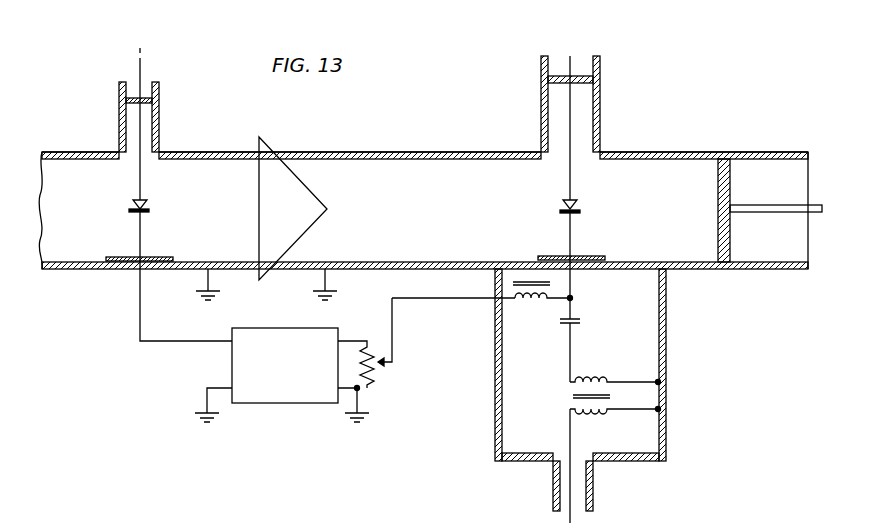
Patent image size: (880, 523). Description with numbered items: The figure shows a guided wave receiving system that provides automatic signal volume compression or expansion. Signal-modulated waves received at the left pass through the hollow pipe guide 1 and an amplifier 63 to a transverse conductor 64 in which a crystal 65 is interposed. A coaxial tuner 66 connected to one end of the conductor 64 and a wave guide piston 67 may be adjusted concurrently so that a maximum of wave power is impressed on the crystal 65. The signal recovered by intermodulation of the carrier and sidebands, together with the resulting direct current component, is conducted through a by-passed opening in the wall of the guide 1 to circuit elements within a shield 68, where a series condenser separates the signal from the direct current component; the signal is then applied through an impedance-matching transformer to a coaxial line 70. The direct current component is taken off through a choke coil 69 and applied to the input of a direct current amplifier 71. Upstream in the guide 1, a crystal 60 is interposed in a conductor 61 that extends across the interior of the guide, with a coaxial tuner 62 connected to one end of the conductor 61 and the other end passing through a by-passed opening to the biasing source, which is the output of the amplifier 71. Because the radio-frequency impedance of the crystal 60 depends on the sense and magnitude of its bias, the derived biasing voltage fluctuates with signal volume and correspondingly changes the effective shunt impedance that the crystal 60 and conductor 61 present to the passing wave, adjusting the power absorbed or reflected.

The hollow pipe guide 1 is at (62, 152).
The crystal 60 is at (148, 206).
The conductor 61 is at (143, 239).
The coaxial tuner 62 is at (160, 113).
The amplifier 63 is at (267, 142).
The transverse conductor 64 is at (572, 178).
The crystal 65 is at (580, 207).
The coaxial tuner 66 is at (600, 104).
The wave guide piston 67 is at (731, 178).
The shield 68 is at (667, 336).
The choke coil 69 is at (535, 315).
The coaxial line 70 is at (576, 488).
The direct current amplifier 71 is at (256, 328).